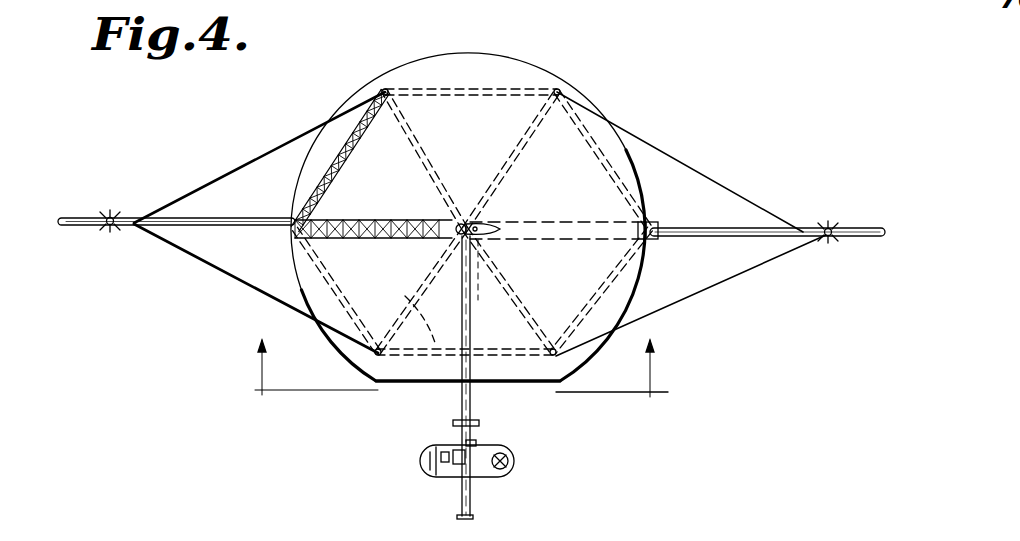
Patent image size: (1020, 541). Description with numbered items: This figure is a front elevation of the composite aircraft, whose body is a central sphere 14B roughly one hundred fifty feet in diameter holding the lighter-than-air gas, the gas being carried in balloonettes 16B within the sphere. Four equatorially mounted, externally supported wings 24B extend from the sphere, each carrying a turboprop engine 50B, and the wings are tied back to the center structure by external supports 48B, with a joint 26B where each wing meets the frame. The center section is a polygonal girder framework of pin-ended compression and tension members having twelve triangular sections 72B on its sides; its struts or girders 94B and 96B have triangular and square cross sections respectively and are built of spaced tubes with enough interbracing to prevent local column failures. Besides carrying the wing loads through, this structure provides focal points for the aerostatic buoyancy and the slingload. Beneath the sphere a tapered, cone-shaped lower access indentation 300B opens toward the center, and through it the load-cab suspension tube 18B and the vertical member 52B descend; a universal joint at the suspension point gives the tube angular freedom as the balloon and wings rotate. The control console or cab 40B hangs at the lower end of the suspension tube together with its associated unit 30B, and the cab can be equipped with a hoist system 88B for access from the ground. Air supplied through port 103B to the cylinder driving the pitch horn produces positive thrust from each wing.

The central sphere 14B is at (640, 86).
The hexagonal frame 16B is at (570, 283).
The triangular section 72B is at (475, 120).
The strut or girder 94B is at (345, 146).
The strut or girder 96B is at (330, 215).
The wing 24B is at (80, 218).
The turboprop engine 50B is at (112, 226).
The shaft joint 26B is at (652, 236).
The stay cable 48B is at (413, 300).
The vertical shaft 52B is at (486, 376).
The lower access indentation 300B is at (455, 386).
The port 103B is at (468, 393).
The load-cab suspension tube 18B is at (455, 425).
The motor pod 30B is at (482, 437).
The control cab 40B is at (428, 474).
The hoist system 88B is at (470, 500).